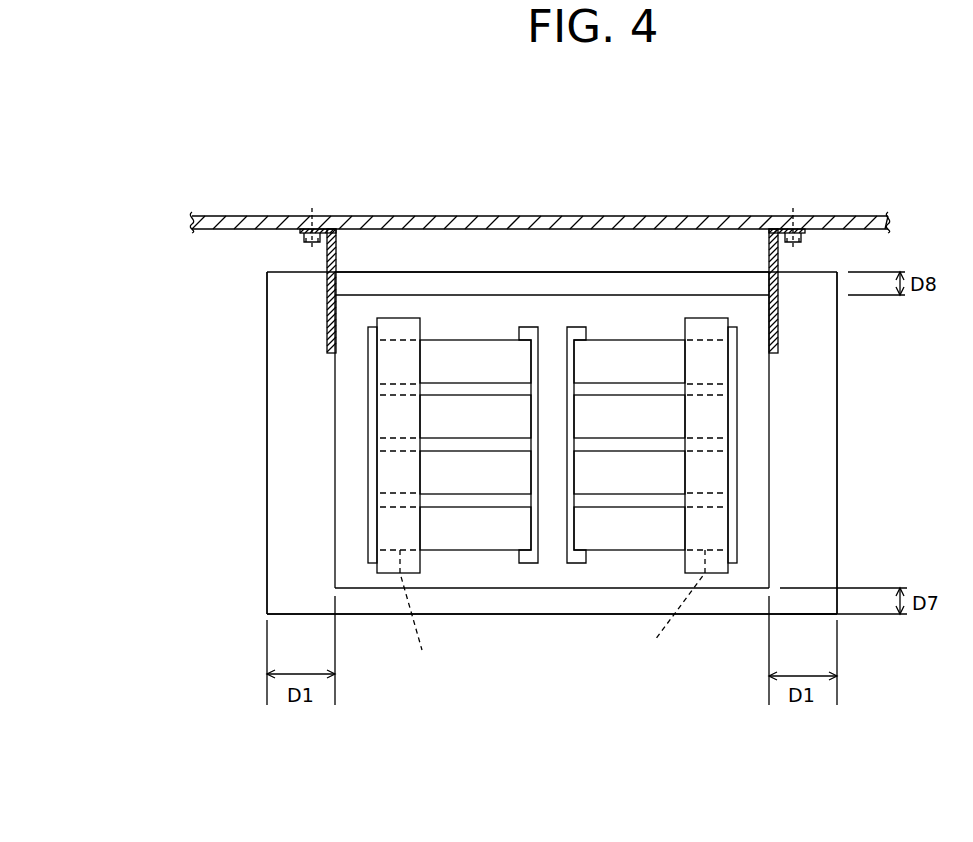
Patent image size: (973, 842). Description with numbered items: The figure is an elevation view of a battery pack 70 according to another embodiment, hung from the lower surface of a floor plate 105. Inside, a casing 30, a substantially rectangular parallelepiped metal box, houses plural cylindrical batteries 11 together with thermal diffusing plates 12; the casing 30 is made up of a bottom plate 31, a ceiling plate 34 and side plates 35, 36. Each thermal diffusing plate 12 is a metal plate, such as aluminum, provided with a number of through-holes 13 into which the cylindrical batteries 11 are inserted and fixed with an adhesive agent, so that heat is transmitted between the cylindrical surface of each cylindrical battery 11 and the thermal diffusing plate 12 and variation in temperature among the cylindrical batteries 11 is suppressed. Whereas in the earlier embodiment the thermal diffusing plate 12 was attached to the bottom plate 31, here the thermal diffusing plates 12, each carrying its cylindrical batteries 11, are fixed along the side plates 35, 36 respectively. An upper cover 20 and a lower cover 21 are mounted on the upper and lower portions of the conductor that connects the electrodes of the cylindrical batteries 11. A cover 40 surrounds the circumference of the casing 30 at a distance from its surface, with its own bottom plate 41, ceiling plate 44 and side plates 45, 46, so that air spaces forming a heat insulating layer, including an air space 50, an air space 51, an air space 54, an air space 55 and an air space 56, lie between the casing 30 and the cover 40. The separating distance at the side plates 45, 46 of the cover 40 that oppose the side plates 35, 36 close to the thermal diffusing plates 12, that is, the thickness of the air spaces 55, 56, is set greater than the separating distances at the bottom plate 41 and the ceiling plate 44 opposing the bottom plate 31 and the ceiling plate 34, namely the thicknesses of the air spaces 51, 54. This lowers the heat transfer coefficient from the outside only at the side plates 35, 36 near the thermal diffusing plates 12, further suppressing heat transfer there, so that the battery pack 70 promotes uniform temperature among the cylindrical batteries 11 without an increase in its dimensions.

The cylindrical battery 11 is at (472, 340).
The thermal diffusing plate 12 is at (395, 575).
The through-hole 13 is at (552, 616).
The upper cover 20 is at (532, 565).
The lower cover 21 is at (363, 565).
The casing 30 is at (497, 598).
The bottom plate 31 is at (623, 590).
The ceiling plate 34 is at (686, 295).
The side plate 35 is at (770, 470).
The side plate 36 is at (334, 403).
The cover 40 is at (462, 623).
The bottom plate 41 is at (595, 614).
The ceiling plate 44 is at (594, 272).
The side plate 45 is at (838, 408).
The side plate 46 is at (267, 463).
The air space 50 is at (523, 733).
The air space 51 is at (716, 605).
The air space 54 is at (515, 281).
The air space 55 is at (810, 532).
The air space 56 is at (293, 533).
The battery pack 70 is at (136, 339).
The floor plate 105 is at (870, 214).